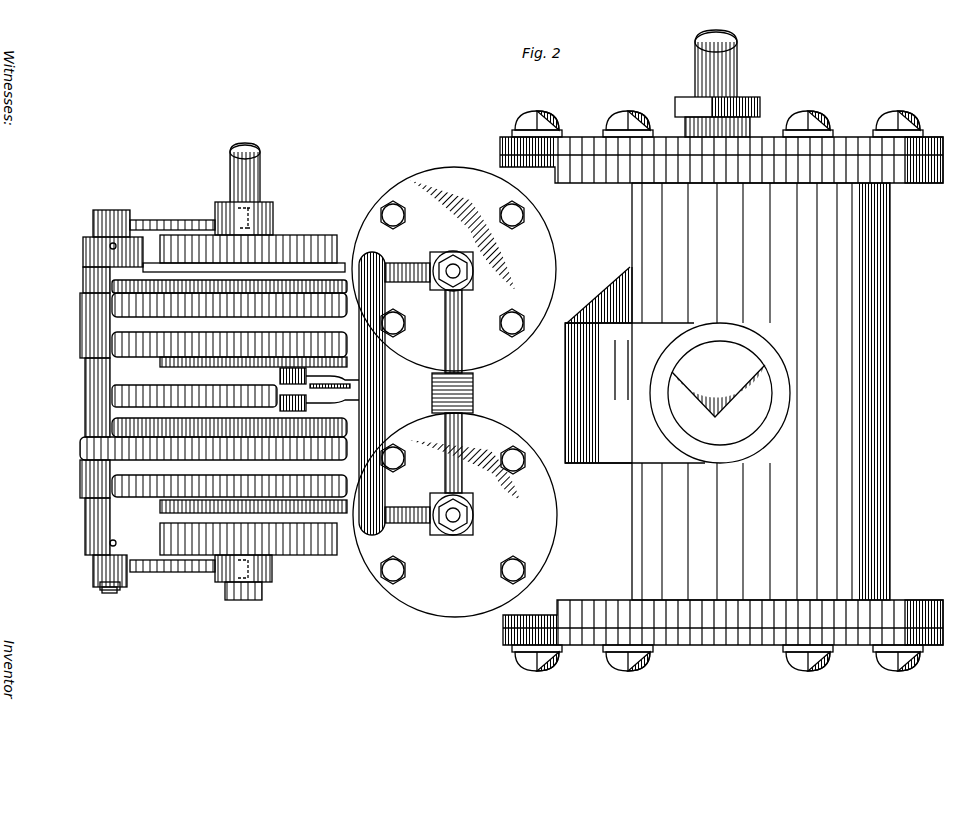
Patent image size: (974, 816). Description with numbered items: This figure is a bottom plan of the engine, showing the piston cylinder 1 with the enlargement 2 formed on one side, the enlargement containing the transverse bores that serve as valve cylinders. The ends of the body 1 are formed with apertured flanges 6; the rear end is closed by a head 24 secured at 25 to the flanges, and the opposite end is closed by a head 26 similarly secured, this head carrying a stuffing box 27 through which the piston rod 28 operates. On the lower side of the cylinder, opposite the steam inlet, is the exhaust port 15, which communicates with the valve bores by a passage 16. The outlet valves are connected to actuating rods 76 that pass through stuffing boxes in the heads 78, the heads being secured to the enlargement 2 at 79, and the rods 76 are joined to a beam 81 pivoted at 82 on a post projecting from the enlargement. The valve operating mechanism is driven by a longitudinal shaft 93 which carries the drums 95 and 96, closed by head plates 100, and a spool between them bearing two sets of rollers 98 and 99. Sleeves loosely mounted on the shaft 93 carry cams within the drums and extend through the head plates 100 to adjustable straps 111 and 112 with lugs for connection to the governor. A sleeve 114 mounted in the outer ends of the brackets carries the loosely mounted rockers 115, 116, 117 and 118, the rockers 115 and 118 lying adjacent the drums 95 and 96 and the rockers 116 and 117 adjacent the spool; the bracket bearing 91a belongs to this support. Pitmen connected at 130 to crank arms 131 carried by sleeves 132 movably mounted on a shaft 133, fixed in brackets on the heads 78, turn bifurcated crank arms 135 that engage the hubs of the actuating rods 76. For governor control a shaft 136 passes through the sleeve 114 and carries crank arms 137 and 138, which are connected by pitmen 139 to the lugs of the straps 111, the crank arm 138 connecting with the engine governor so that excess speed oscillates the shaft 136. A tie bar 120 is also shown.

The piston cylinder 1 is at (893, 388).
The enlargement 2 is at (586, 267).
The apertured flanges 6 is at (916, 180).
The exhaust port 15 is at (720, 393).
The passage 16 is at (635, 365).
The head 24 is at (712, 638).
The securing means 25 is at (535, 122).
The head 26 is at (845, 140).
The stuffing box 27 is at (762, 100).
The piston rod 28 is at (740, 58).
The actuating rods 76 is at (468, 270).
The heads 78 is at (454, 392).
The securing means 79 is at (527, 214).
The beam 81 is at (460, 332).
The pivot 82 is at (475, 392).
The bracket 91a is at (82, 330).
The shaft 93 is at (258, 160).
The drum 95 is at (168, 235).
The drum 96 is at (288, 558).
The rollers 98 is at (140, 340).
The rollers 99 is at (130, 445).
The head plates 100 is at (342, 240).
The adjustable strap 111 is at (268, 212).
The adjustable strap 112 is at (215, 585).
The sleeve 114 is at (93, 560).
The rocker 115 is at (85, 523).
The rocker 116 is at (180, 415).
The rocker 117 is at (190, 393).
The rocker 118 is at (270, 262).
The lower tie bar 120 is at (152, 574).
The connection 130 is at (262, 487).
The crank arms 131 is at (343, 417).
The sleeves 132 is at (385, 375).
The shaft 133 is at (377, 535).
The bifurcated crank arms 135 is at (412, 262).
The shaft 136 is at (113, 597).
The crank arm 137 is at (97, 585).
The crank arm 138 is at (103, 210).
The pitmen 139 is at (148, 220).